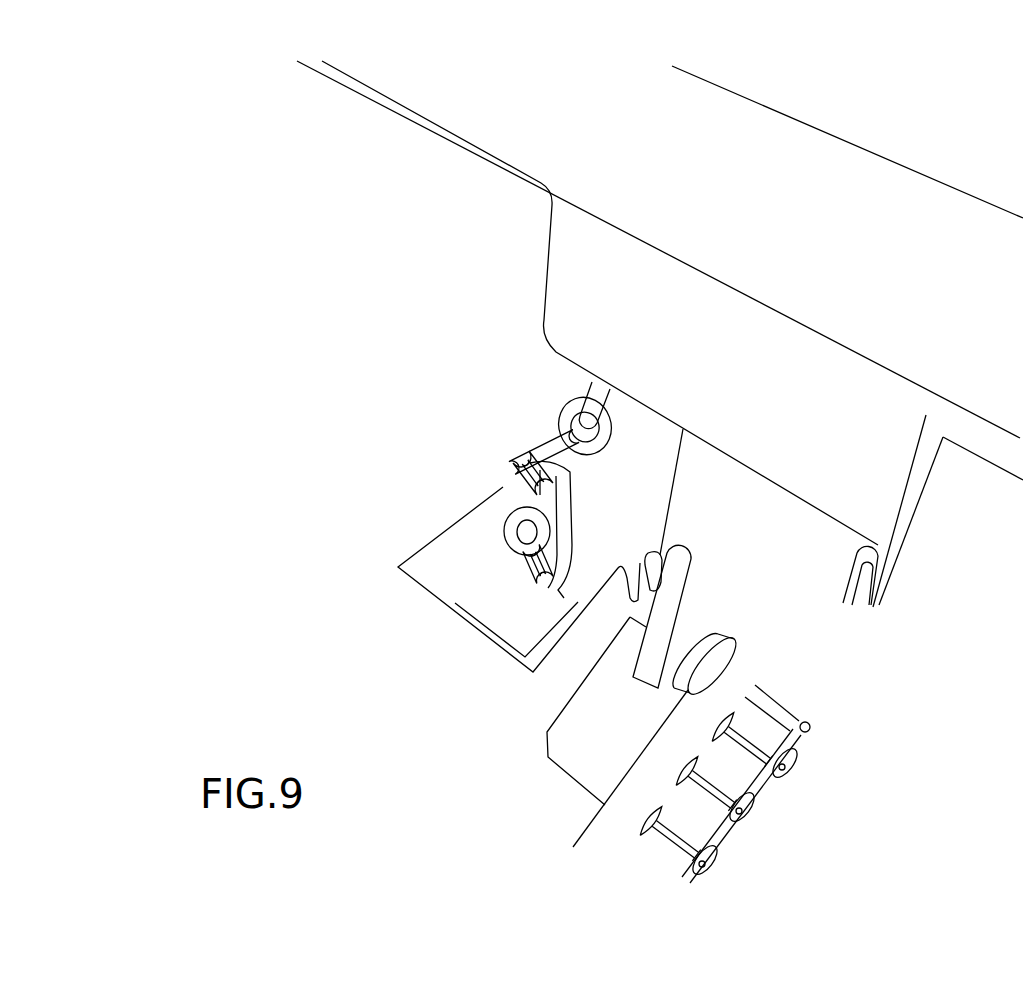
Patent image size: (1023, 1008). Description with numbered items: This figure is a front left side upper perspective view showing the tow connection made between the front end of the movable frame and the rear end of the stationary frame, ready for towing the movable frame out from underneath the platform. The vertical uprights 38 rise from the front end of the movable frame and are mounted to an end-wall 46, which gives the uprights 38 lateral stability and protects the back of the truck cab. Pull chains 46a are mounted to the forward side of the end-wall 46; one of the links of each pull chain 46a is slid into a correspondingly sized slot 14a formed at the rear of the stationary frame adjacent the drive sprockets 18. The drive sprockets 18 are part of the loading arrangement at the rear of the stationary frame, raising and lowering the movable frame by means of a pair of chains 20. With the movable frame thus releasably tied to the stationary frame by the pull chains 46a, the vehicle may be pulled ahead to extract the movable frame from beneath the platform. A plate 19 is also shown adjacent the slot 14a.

The end-wall 46 is at (660, 303).
The pull chains 46a is at (581, 382).
The slots 14a is at (556, 480).
The plate 19 is at (435, 532).
The vertical uprights 38 is at (912, 534).
The drive sprockets 18 is at (740, 667).
The chains 20 is at (764, 783).